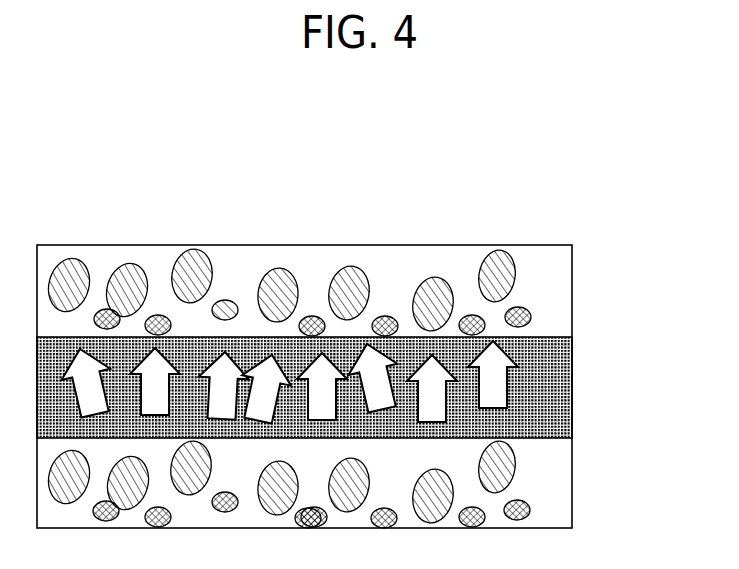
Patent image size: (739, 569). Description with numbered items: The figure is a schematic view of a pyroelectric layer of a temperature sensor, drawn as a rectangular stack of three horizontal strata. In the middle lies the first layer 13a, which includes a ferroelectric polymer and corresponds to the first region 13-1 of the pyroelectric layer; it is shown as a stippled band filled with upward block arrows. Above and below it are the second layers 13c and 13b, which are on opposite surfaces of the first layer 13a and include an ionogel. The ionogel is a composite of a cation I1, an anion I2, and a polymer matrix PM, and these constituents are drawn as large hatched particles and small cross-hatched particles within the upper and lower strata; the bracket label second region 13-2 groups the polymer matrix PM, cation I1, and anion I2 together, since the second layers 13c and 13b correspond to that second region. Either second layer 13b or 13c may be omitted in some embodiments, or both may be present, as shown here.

The second region 13-2 is at (472, 183).
The polymer matrix PM is at (383, 256).
The cation I1 is at (432, 290).
The anion I2 is at (468, 318).
The second layer 13c is at (560, 277).
The first layer 13a is at (560, 385).
The first region 13-1 is at (304, 387).
The second layer 13b is at (560, 478).